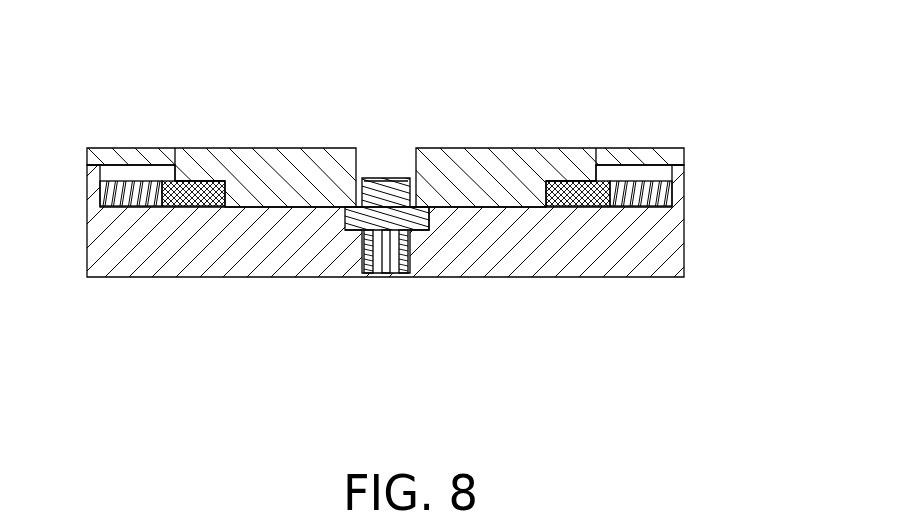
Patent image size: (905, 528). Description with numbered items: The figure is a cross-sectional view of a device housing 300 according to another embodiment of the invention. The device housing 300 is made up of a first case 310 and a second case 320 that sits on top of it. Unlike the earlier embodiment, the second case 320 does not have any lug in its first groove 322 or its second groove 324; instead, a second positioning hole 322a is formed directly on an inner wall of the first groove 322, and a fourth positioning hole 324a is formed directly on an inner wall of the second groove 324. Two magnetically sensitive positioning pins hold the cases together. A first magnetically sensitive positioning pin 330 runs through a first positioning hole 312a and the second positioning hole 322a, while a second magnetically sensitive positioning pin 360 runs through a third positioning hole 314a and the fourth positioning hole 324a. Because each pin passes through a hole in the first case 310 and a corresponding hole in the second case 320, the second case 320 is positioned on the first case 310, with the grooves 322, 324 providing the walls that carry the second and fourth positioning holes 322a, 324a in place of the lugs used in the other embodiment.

The device housing 300 is at (799, 433).
The first case 310 is at (707, 287).
The second case 320 is at (706, 151).
The first groove 322 is at (665, 170).
The second positioning hole 322a is at (599, 168).
The second groove 324 is at (92, 170).
The fourth positioning hole 324a is at (175, 168).
The first positioning hole 312a is at (645, 185).
The third positioning hole 314a is at (128, 185).
The first magnetically sensitive positioning pin 330 is at (557, 180).
The second magnetically sensitive positioning pin 360 is at (213, 180).